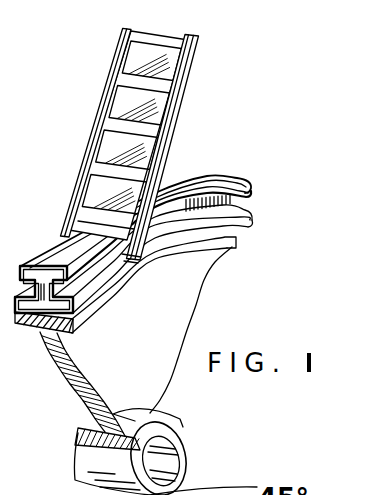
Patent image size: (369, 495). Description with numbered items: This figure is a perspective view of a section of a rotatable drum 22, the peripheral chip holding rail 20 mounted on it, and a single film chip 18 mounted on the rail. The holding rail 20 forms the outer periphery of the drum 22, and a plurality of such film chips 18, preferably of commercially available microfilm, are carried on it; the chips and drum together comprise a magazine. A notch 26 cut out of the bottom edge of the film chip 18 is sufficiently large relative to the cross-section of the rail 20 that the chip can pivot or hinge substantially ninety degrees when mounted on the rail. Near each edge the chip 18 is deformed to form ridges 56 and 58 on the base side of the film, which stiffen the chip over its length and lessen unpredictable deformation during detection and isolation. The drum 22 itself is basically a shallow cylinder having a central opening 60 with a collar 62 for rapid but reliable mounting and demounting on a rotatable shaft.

The film chip 18 is at (153, 160).
The holding rail 20 is at (240, 183).
The rotatable drum 22 is at (167, 330).
The notch 26 is at (119, 261).
The ridge 56 is at (128, 49).
The ridge 58 is at (183, 57).
The central opening 60 is at (167, 465).
The collar 62 is at (172, 423).